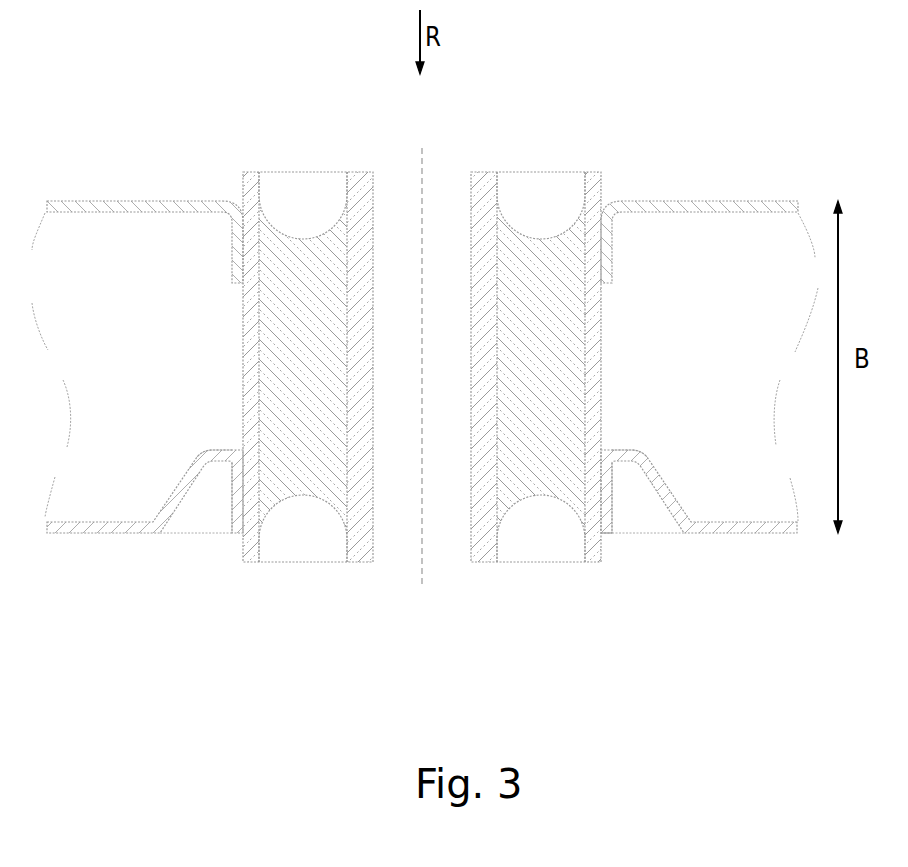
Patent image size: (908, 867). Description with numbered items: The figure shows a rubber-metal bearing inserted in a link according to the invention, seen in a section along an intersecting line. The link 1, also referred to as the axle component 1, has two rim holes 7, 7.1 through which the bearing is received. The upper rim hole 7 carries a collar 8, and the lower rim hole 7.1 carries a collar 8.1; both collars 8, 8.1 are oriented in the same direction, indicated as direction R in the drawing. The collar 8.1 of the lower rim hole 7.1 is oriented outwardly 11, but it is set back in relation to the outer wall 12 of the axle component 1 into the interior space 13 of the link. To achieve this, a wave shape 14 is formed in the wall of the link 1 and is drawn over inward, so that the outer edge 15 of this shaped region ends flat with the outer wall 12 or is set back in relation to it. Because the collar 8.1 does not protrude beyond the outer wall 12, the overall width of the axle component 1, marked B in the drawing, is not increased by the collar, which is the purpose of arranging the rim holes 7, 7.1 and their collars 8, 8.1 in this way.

The link 1 is at (762, 168).
The rim hole 7 is at (232, 246).
The lower rim hole 7.1 is at (231, 497).
The collar 8 is at (612, 262).
The collar 8.1 is at (613, 495).
The outwardly 11 is at (236, 648).
The outer wall 12 is at (100, 535).
The interior space 13 is at (140, 394).
The wave shape 14 is at (195, 453).
The outer edge 15 is at (608, 533).